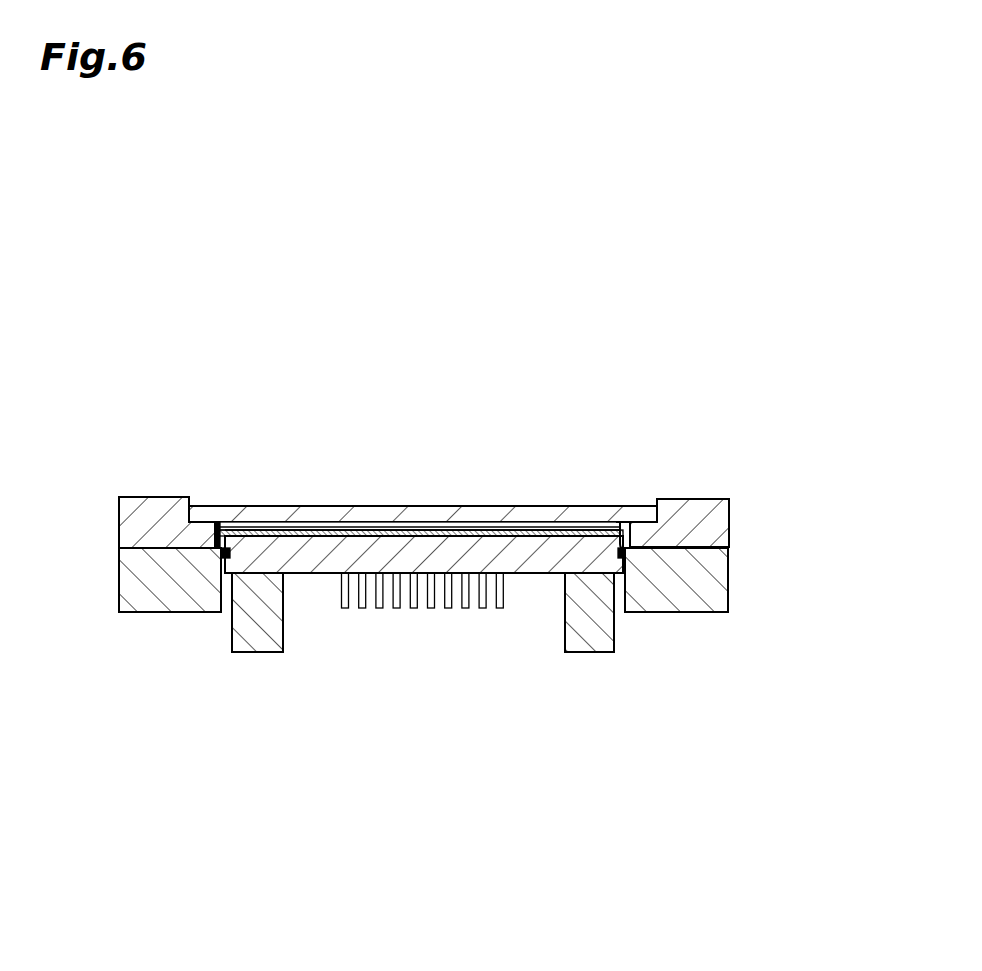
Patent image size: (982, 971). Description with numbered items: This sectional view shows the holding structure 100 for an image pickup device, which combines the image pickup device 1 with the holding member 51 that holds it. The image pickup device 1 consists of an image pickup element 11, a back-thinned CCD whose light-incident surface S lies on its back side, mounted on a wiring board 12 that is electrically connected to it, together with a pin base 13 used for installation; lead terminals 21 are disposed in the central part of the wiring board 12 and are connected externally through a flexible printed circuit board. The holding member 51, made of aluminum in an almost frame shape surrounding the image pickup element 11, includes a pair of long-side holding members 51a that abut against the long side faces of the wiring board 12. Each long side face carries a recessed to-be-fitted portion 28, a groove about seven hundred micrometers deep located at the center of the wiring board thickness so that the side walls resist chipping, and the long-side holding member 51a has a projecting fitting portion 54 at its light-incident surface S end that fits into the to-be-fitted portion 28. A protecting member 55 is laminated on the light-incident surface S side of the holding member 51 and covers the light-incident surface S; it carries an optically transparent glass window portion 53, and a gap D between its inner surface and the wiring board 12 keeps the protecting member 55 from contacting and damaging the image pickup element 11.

The holding structure for an image pickup device 100 is at (655, 286).
The image pickup device 1 is at (236, 662).
The image pickup element 11 is at (577, 532).
The wiring board 12 is at (551, 584).
The pin base 13 is at (592, 662).
The lead terminal 21 is at (500, 610).
The to-be-fitted portion 28 is at (222, 558).
The holding member 51 is at (114, 569).
The long-side holding member 51a is at (118, 608).
The glass window portion 53 is at (290, 507).
The fitting portion 54 is at (222, 550).
The protecting member 55 is at (735, 495).
The gap D is at (216, 521).
The light-incident surface S is at (507, 527).